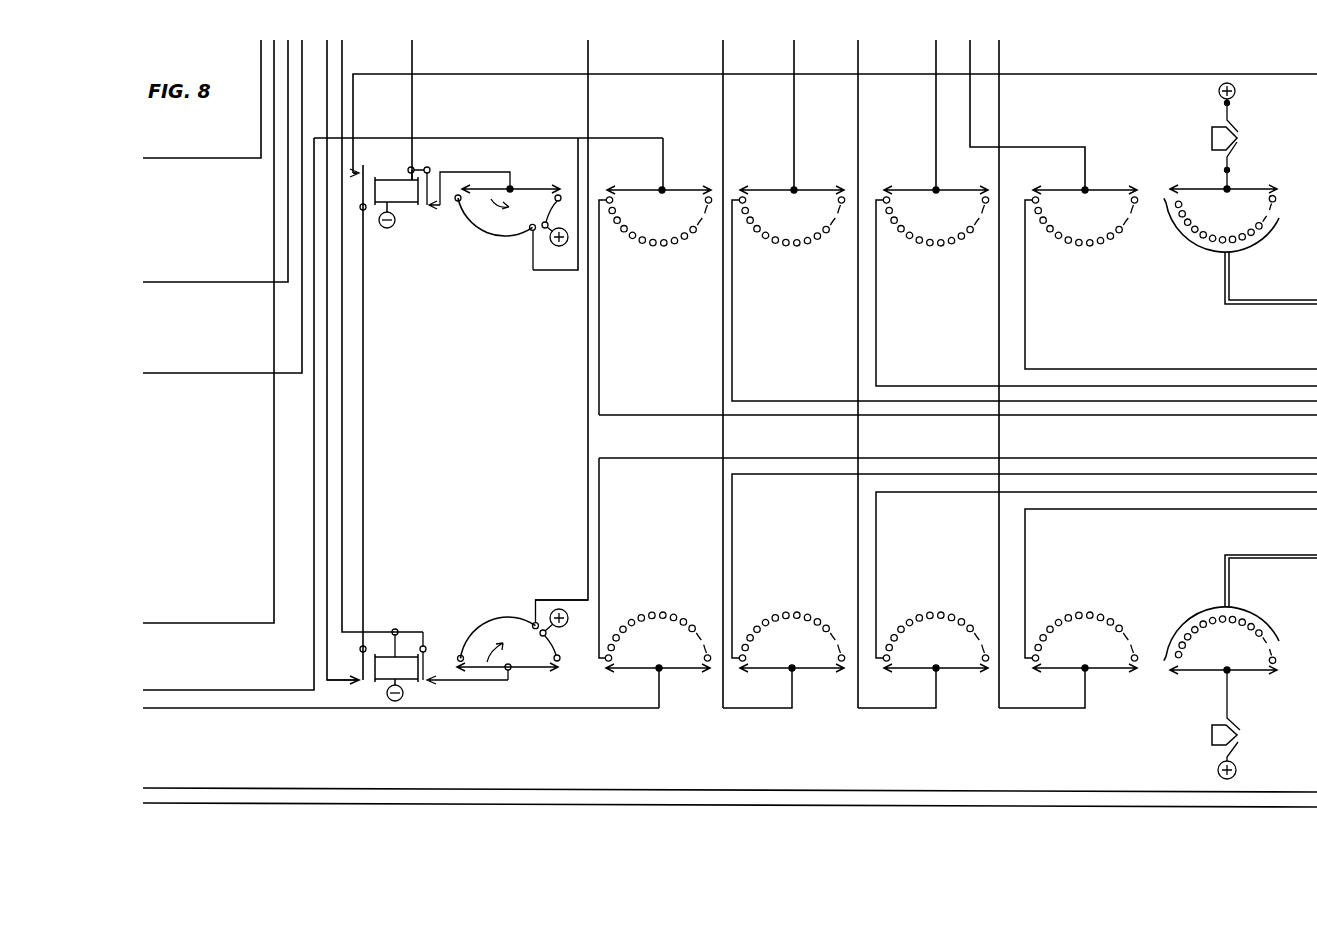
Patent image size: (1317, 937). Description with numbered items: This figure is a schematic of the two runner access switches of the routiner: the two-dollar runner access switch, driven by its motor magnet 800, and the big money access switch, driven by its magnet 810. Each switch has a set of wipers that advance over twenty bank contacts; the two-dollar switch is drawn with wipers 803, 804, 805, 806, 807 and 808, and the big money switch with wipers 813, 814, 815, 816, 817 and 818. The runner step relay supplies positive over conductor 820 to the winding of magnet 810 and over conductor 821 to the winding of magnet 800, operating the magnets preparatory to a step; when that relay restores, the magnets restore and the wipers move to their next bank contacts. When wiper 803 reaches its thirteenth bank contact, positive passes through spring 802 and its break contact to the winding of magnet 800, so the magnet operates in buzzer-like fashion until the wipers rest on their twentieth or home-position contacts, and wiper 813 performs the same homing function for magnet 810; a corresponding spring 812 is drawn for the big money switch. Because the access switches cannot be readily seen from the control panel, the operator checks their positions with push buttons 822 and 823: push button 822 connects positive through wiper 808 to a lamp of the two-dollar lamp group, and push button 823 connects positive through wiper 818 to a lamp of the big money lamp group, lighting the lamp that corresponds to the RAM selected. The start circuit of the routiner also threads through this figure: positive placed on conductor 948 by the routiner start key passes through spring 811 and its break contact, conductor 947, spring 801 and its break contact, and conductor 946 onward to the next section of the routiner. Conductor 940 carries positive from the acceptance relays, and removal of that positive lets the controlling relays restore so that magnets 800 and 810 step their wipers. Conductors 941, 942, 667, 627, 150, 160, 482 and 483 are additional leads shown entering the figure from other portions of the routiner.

The conductor 150 is at (675, 415).
The conductor 160 is at (675, 458).
The conductor 482 is at (225, 788).
The conductor 483 is at (222, 803).
The conductor 627 is at (213, 707).
The conductor 667 is at (548, 137).
The motor magnet 800 is at (398, 202).
The spring 801 is at (357, 170).
The spring 802 is at (430, 207).
The wiper 803 is at (526, 189).
The rotary switch 804 is at (698, 178).
The rotary switch 805 is at (832, 178).
The rotary switch 806 is at (972, 178).
The rotary switch 807 is at (1125, 178).
The wiper 808 is at (1264, 178).
The magnet 810 is at (385, 673).
The spring 811 is at (358, 684).
The switch 812 is at (430, 682).
The wiper 813 is at (518, 669).
The rotary switch 814 is at (670, 670).
The rotary switch 815 is at (806, 670).
The rotary switch 816 is at (946, 670).
The rotary switch 817 is at (1098, 670).
The wiper 818 is at (1243, 672).
The conductor 820 is at (343, 60).
The conductor 821 is at (413, 59).
The push button 822 is at (1212, 136).
The push button 823 is at (1212, 736).
The conductor 940 is at (208, 623).
The conductor 941 is at (199, 158).
The conductor 942 is at (199, 282).
The conductor 946 is at (685, 73).
The conductor 947 is at (363, 480).
The conductor 948 is at (199, 373).